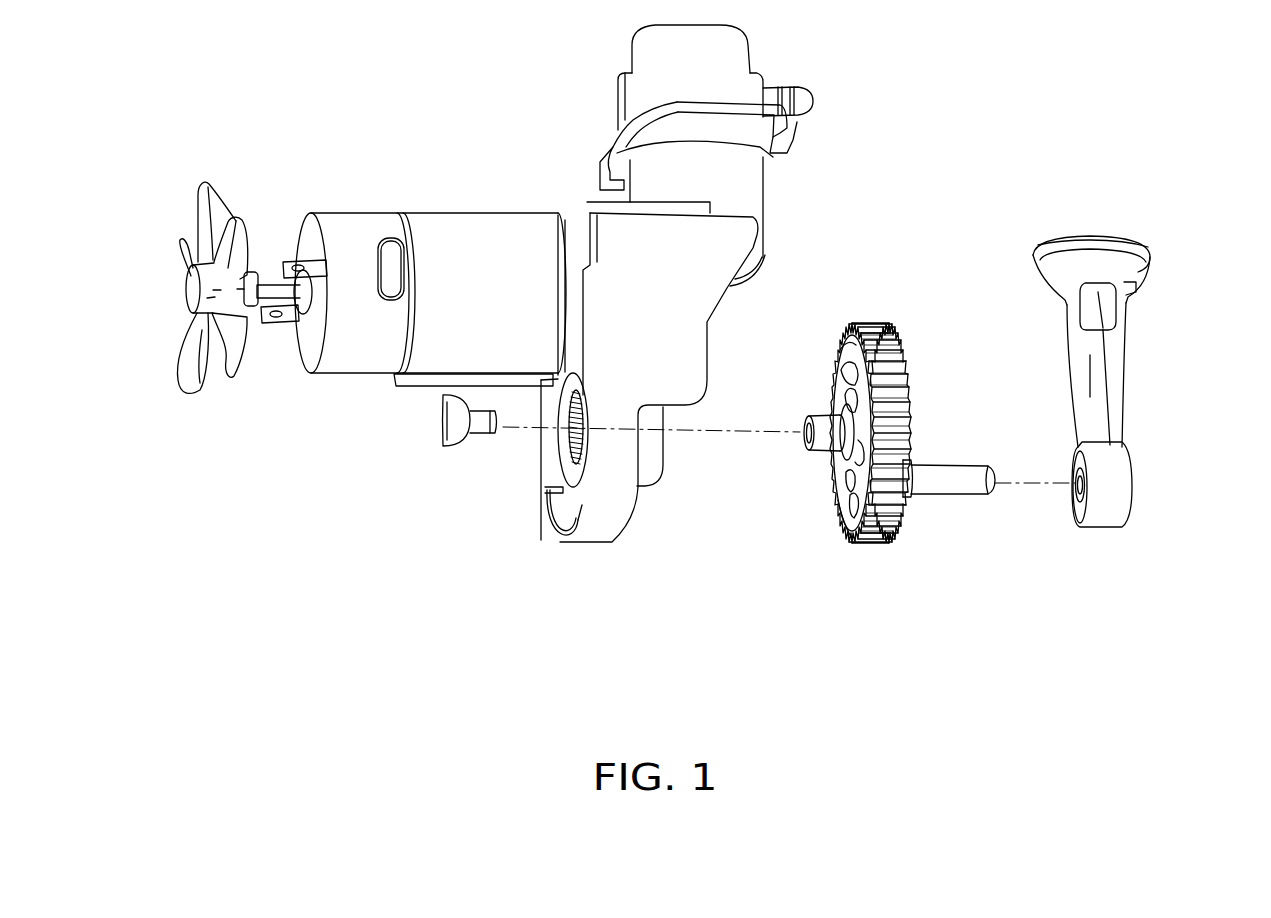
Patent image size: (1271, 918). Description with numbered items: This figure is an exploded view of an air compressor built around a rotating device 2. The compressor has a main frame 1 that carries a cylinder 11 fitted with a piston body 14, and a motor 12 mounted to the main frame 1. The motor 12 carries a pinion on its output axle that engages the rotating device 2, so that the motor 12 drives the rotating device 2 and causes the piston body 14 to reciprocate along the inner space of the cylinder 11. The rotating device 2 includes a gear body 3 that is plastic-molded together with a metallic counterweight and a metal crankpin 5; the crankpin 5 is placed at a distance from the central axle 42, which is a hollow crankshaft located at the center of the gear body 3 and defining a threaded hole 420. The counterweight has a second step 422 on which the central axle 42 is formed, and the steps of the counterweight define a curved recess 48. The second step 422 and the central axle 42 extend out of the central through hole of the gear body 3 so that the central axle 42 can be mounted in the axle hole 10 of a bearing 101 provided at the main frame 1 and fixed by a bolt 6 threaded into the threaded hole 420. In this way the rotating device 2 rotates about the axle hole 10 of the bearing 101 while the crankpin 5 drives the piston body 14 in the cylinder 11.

The main frame 1 is at (638, 285).
The rotating device 2 is at (903, 273).
The gear body 3 is at (873, 545).
The crankpin 5 is at (955, 482).
The bolt 6 is at (480, 424).
The axle hole 10 is at (571, 432).
The cylinder 11 is at (643, 183).
The motor 12 is at (432, 235).
The piston body 14 is at (1113, 375).
The central axle 42 is at (824, 446).
The curved recess 48 is at (830, 498).
The bearing 101 is at (547, 503).
The threaded hole 420 is at (805, 435).
The second step 422 is at (843, 388).